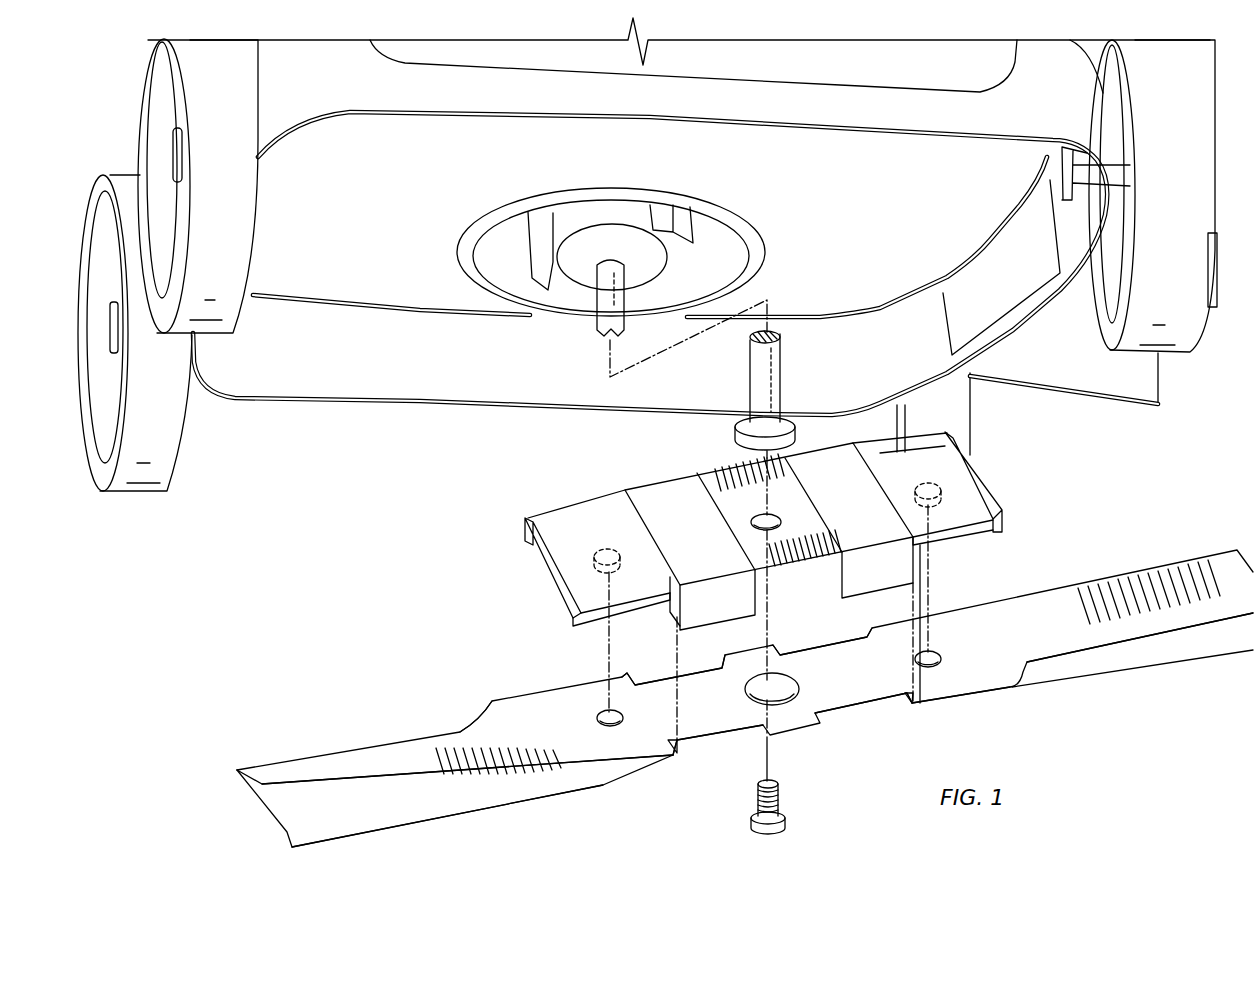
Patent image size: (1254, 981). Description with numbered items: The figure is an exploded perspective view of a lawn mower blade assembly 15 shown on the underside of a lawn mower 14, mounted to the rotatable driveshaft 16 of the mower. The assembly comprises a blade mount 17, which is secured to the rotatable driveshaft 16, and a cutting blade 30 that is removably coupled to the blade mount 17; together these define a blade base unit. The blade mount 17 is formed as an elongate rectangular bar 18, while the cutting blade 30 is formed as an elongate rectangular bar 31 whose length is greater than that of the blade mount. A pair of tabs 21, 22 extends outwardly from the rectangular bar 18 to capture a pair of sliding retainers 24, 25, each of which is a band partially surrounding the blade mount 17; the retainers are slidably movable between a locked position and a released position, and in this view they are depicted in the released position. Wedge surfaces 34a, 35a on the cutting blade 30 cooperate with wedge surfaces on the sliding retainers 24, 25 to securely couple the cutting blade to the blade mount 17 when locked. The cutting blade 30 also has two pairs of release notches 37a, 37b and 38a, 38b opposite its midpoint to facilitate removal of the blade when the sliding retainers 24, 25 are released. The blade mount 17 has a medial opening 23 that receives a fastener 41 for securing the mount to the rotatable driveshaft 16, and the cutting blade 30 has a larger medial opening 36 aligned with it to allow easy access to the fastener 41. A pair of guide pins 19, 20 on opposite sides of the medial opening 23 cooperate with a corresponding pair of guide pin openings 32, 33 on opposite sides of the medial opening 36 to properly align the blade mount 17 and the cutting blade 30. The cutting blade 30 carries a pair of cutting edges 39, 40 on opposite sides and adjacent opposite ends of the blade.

The lawn mower 14 is at (112, 104).
The lawn mower blade assembly 15 is at (362, 553).
The rotatable driveshaft 16 is at (752, 373).
The blade mount 17 is at (752, 553).
The elongate rectangular bar 18 is at (568, 525).
The guide pin 19 is at (600, 557).
The guide pin 20 is at (932, 508).
The tab 21 is at (526, 522).
The tab 22 is at (980, 470).
The medial opening 23 is at (800, 560).
The sliding retainer 24 is at (690, 477).
The sliding retainer 25 is at (823, 460).
The cutting blade 30 is at (745, 699).
The elongate rectangular bar 31 is at (393, 787).
The guide pin opening 32 is at (602, 712).
The guide pin opening 33 is at (943, 658).
The wedge surface 34a is at (553, 792).
The wedge surface 35a is at (968, 700).
The medial opening 36 is at (752, 689).
The release notch 37a is at (733, 748).
The release notch 37b is at (658, 673).
The release notch 38a is at (863, 725).
The release notch 38b is at (804, 649).
The cutting edge 39 is at (353, 748).
The cutting edge 40 is at (1200, 664).
The fastener 41 is at (787, 826).